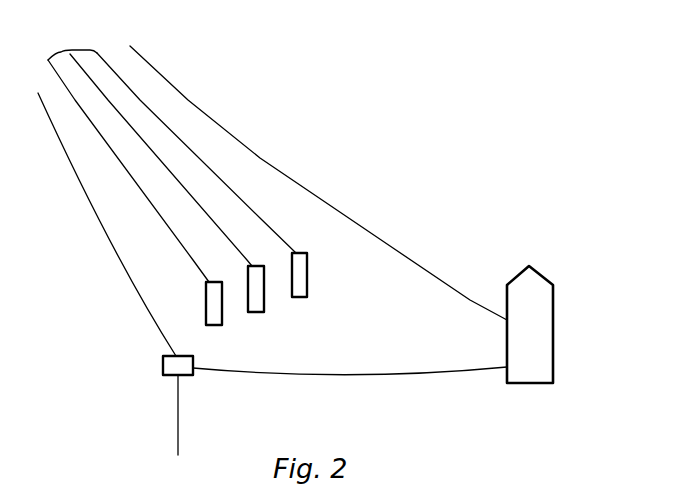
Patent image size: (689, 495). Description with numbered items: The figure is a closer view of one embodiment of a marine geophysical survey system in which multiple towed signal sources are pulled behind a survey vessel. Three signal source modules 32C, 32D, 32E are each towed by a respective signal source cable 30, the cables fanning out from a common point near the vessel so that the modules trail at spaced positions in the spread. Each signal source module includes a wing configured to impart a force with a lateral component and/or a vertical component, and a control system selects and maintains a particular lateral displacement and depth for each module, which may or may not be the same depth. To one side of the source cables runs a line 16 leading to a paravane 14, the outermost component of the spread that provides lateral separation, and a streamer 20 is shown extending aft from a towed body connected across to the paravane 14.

The paravane 14 is at (553, 330).
The lead-in tow line 16 is at (117, 255).
The streamer 20 is at (178, 425).
The signal source cable 30 is at (61, 50).
The signal source module 32C is at (307, 273).
The signal source module 32D is at (264, 312).
The signal source module 32E is at (222, 325).